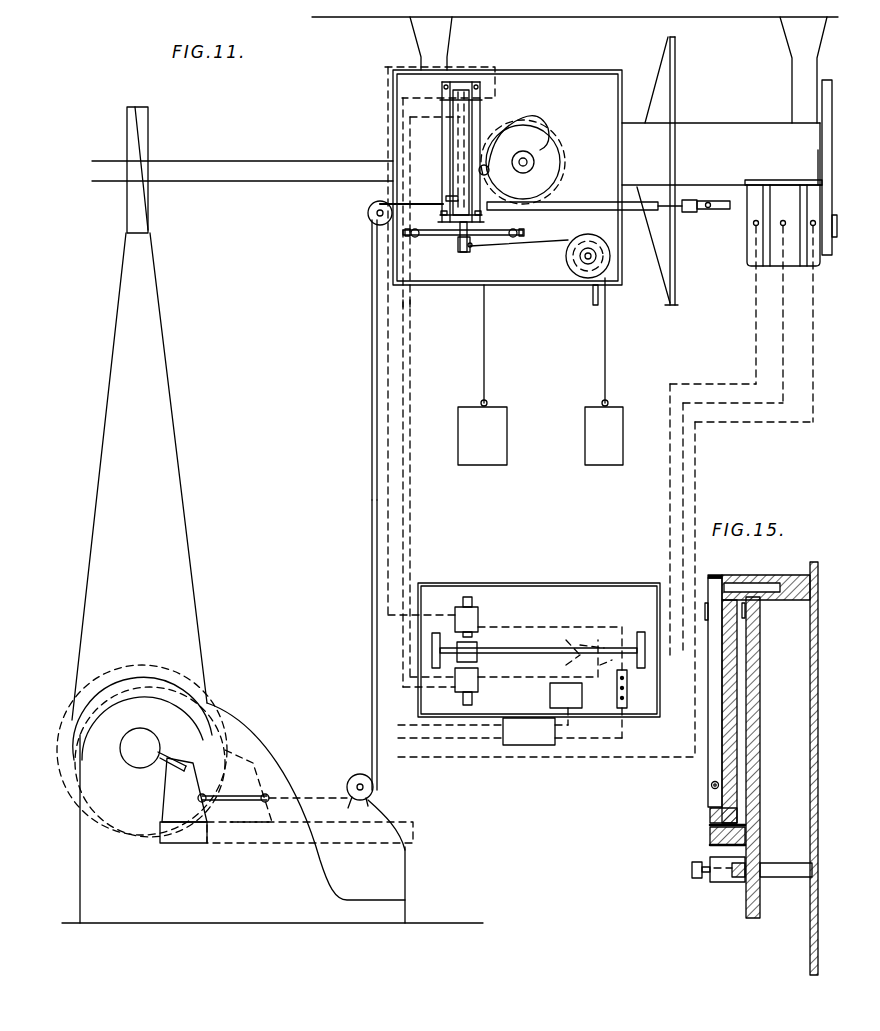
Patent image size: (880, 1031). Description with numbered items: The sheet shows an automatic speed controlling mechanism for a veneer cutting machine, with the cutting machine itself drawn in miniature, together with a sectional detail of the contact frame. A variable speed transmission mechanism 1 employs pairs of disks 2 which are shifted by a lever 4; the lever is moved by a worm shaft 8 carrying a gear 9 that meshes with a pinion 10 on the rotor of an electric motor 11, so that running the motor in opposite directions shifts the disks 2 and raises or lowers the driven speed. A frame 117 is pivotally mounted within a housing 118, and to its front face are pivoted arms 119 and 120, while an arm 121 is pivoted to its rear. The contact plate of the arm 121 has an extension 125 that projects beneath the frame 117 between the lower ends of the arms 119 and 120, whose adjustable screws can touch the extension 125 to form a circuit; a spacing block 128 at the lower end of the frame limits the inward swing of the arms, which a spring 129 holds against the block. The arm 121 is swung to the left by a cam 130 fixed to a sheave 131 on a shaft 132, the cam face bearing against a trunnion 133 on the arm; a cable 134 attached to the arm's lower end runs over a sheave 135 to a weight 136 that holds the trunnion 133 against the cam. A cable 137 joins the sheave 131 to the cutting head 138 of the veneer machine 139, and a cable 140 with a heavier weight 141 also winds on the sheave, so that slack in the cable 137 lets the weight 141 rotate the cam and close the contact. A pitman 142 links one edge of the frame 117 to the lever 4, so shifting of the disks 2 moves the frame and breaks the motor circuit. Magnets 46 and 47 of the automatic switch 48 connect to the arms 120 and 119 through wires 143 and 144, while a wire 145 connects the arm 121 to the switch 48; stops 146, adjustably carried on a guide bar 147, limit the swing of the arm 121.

In FIG. 11, the variable speed transmission mechanism 1 is at (735, 132).
In FIG. 11, the disks 2 is at (676, 92).
In FIG. 11, the lever 4 is at (716, 209).
In FIG. 11, the worm shaft 8 is at (822, 165).
In FIG. 11, the gear 9 is at (826, 138).
In FIG. 11, the pinion 10 is at (831, 222).
In FIG. 11, the motor 11 is at (783, 223).
In FIG. 11, the magnet 46 is at (476, 616).
In FIG. 11, the magnet 47 is at (478, 688).
In FIG. 11, the automatic switch 48 is at (565, 600).
In FIG. 11, the frame 117 is at (460, 151).
In FIG. 15, the frame 117 is at (737, 727).
In FIG. 11, the housing 118 is at (405, 98).
In FIG. 15, the housing 118 is at (812, 804).
In FIG. 11, the arm 119 is at (450, 172).
In FIG. 15, the arm 119 is at (712, 770).
In FIG. 11, the arm 120 is at (480, 116).
In FIG. 11, the arm 121 is at (461, 248).
In FIG. 15, the arm 121 is at (760, 683).
In FIG. 15, the extension 125 is at (710, 846).
In FIG. 11, the spacing block 128 is at (448, 202).
In FIG. 15, the spacing block 128 is at (710, 818).
In FIG. 15, the spring 129 is at (712, 788).
In FIG. 11, the cam 130 is at (520, 134).
In FIG. 11, the sheave 131 is at (563, 157).
In FIG. 11, the shaft 132 is at (523, 158).
In FIG. 11, the trunnion 133 is at (489, 171).
In FIG. 11, the cable 134 is at (604, 340).
In FIG. 11, the sheave 135 is at (597, 240).
In FIG. 11, the weight 136 is at (604, 432).
In FIG. 11, the cable 137 is at (371, 733).
In FIG. 11, the cutting head 138 is at (190, 748).
In FIG. 11, the veneer machine 139 is at (270, 578).
In FIG. 11, the cable 140 is at (486, 324).
In FIG. 11, the weight 141 is at (482, 432).
In FIG. 11, the pitman 142 is at (645, 211).
In FIG. 11, the wire 143 is at (371, 470).
In FIG. 11, the wire 144 is at (404, 484).
In FIG. 11, the wire 145 is at (412, 378).
In FIG. 11, the stops 146 is at (413, 229).
In FIG. 15, the stops 146 is at (718, 882).
In FIG. 11, the guide bar 147 is at (458, 243).
In FIG. 15, the guide bar 147 is at (740, 880).